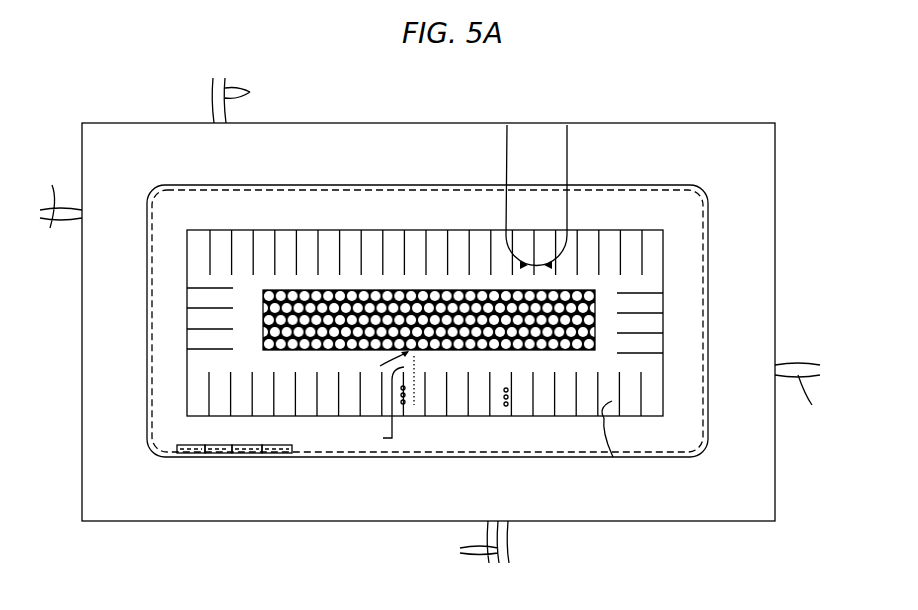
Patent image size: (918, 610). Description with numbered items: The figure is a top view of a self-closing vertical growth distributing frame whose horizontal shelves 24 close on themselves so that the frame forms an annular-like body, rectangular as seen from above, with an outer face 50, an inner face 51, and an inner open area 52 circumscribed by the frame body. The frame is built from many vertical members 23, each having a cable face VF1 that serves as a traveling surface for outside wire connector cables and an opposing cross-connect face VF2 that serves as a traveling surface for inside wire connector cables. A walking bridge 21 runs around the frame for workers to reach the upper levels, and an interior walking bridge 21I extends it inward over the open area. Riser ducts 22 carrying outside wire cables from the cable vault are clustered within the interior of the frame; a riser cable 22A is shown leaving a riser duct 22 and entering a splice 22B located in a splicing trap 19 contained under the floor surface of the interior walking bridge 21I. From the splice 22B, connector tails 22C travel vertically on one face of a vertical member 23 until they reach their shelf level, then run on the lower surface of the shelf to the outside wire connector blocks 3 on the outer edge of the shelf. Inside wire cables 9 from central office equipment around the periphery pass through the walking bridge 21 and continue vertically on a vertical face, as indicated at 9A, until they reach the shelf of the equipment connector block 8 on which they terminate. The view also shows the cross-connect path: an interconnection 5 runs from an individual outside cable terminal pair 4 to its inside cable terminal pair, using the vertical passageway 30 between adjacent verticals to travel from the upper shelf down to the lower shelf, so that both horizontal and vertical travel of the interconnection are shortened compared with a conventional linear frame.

The walking bridge 21 is at (454, 497).
The interior walking bridge 21I is at (307, 376).
The outer face 50 is at (146, 319).
The shelf 24 is at (708, 440).
The inner face 51 is at (455, 266).
The inner open area 52 is at (553, 291).
The riser duct 22 is at (267, 290).
The riser cable 22A is at (377, 363).
The splice 22B is at (374, 407).
The connector tails 22C is at (410, 408).
The vertical member 23 is at (232, 333).
The splicing trap 19 is at (430, 379).
The inside wire cable vertical run 9A is at (507, 385).
The vertical passageway 30 is at (612, 401).
The outside cable terminal pair 4 is at (612, 445).
The interconnection 5 is at (604, 443).
The outside wire connector block 3 is at (178, 454).
The equipment connector block 8 is at (215, 454).
The inside wire cable 9 is at (431, 320).
The cable face VF1 is at (507, 125).
The cross-connect face VF2 is at (567, 125).